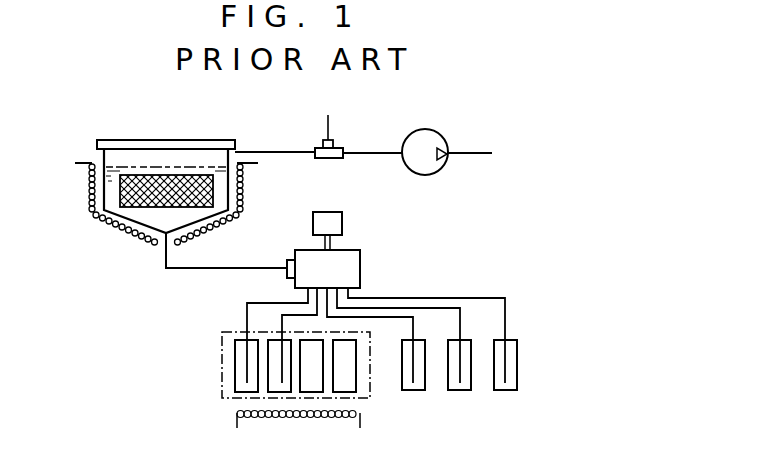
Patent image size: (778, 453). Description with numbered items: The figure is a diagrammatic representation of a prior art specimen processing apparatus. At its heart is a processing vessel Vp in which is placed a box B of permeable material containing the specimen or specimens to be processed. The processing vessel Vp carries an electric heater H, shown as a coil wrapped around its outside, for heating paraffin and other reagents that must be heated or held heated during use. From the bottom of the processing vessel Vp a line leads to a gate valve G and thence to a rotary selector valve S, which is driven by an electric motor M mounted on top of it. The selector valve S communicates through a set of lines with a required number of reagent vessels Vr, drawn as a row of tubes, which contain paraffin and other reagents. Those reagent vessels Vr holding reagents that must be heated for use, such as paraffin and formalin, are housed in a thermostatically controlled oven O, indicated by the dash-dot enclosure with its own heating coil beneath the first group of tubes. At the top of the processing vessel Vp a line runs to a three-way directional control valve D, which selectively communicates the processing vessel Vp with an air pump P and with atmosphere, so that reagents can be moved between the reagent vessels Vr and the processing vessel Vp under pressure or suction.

The processing vessel Vp is at (103, 155).
The box of permeable material B is at (183, 177).
The electric heater H is at (122, 230).
The three-way directional control valve D is at (318, 148).
The air pump P is at (413, 130).
The electric motor M is at (327, 220).
The gate valve G is at (287, 262).
The rotary selector valve S is at (352, 268).
The thermostatically controlled oven O is at (222, 333).
The reagent vessels Vr is at (273, 388).